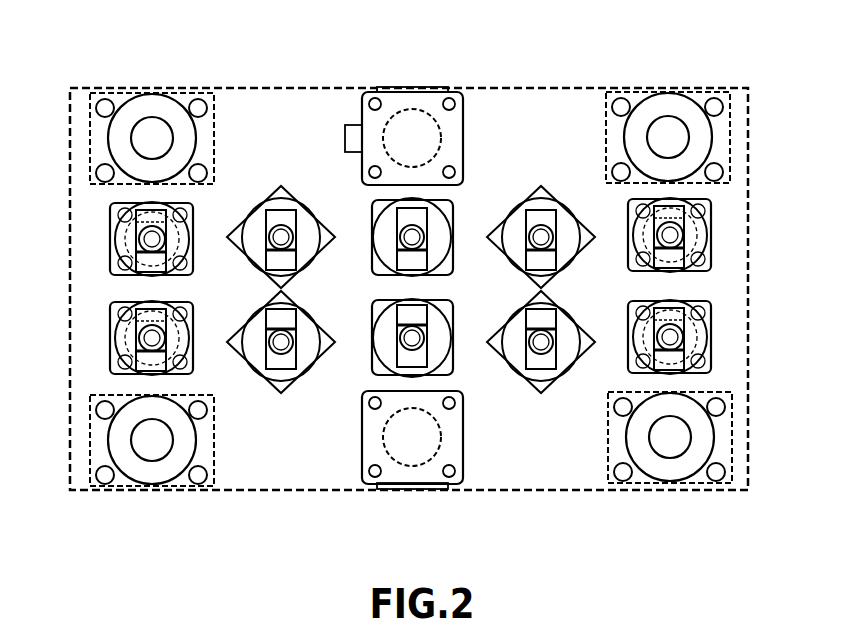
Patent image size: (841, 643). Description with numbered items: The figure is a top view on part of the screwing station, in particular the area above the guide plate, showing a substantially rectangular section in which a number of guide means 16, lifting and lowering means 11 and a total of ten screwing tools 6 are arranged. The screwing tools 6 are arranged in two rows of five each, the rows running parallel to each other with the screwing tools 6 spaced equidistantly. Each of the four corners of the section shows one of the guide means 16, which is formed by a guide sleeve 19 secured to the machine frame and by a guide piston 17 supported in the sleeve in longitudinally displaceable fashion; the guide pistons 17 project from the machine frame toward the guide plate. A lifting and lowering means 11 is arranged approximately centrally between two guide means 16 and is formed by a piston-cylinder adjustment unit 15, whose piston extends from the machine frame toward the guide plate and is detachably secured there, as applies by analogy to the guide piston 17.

The screwing tool 6 is at (258, 217).
The lifting and lowering means 11 is at (404, 290).
The piston-cylinder adjustment unit 15 is at (410, 100).
The guide means 16 is at (106, 88).
The guide piston 17 is at (157, 132).
The guide sleeve 19 is at (175, 115).